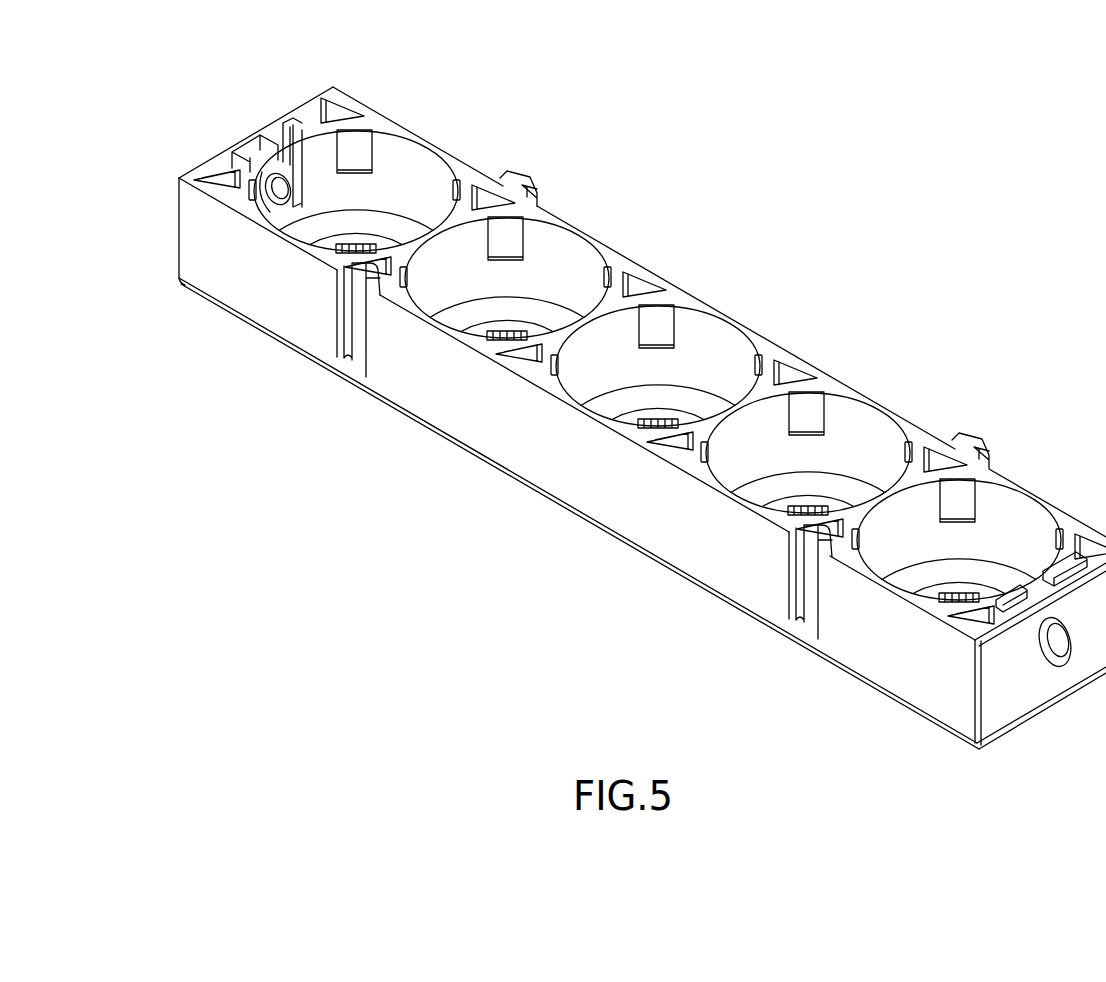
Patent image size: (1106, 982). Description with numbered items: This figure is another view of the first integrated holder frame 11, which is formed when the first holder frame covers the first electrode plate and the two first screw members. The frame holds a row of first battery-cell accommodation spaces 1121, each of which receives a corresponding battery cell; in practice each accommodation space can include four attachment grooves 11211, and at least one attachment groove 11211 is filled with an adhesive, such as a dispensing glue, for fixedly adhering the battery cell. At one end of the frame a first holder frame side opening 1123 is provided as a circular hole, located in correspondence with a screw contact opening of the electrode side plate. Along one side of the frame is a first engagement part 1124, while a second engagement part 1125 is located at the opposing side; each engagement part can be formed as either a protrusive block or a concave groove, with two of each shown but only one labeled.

The first integrated holder frame 11 is at (642, 403).
The first battery-cell accommodation space 1121 is at (410, 168).
The attachment groove 11211 is at (512, 225).
The first engagement part 1124 is at (523, 183).
The second engagement part 1125 is at (355, 313).
The first holder frame side opening 1123 is at (1047, 670).